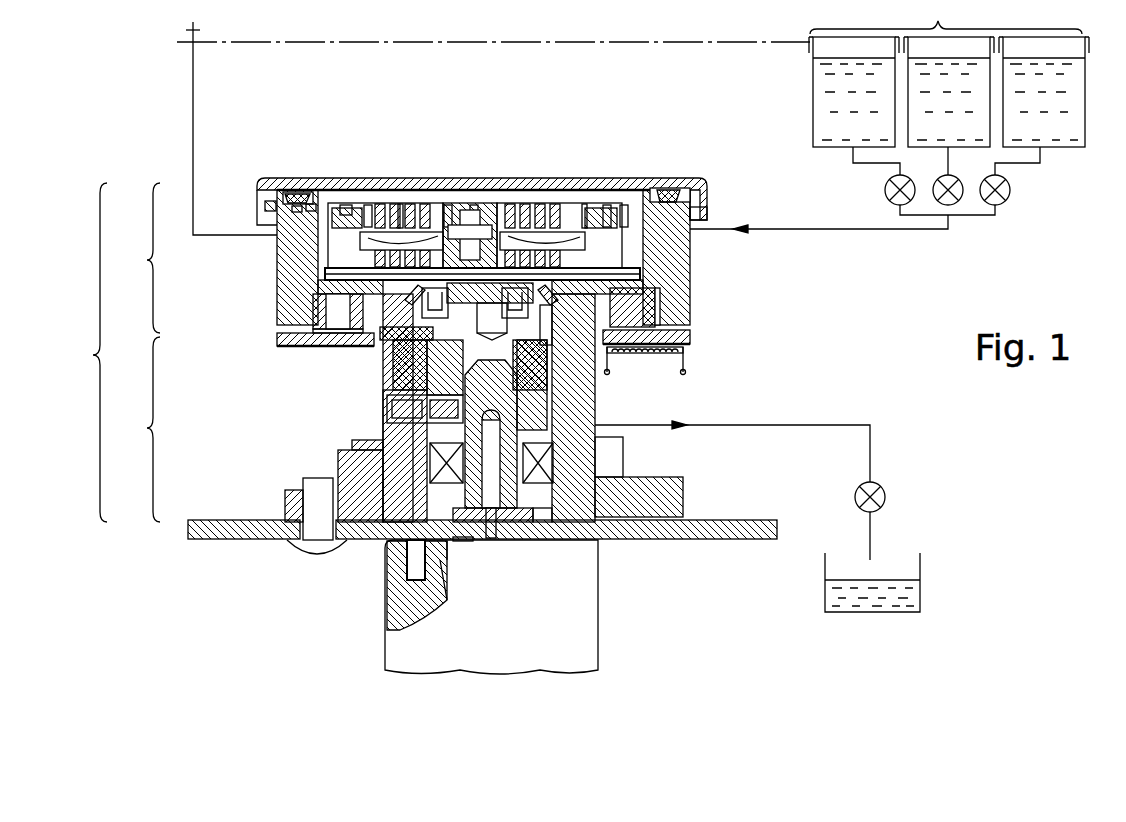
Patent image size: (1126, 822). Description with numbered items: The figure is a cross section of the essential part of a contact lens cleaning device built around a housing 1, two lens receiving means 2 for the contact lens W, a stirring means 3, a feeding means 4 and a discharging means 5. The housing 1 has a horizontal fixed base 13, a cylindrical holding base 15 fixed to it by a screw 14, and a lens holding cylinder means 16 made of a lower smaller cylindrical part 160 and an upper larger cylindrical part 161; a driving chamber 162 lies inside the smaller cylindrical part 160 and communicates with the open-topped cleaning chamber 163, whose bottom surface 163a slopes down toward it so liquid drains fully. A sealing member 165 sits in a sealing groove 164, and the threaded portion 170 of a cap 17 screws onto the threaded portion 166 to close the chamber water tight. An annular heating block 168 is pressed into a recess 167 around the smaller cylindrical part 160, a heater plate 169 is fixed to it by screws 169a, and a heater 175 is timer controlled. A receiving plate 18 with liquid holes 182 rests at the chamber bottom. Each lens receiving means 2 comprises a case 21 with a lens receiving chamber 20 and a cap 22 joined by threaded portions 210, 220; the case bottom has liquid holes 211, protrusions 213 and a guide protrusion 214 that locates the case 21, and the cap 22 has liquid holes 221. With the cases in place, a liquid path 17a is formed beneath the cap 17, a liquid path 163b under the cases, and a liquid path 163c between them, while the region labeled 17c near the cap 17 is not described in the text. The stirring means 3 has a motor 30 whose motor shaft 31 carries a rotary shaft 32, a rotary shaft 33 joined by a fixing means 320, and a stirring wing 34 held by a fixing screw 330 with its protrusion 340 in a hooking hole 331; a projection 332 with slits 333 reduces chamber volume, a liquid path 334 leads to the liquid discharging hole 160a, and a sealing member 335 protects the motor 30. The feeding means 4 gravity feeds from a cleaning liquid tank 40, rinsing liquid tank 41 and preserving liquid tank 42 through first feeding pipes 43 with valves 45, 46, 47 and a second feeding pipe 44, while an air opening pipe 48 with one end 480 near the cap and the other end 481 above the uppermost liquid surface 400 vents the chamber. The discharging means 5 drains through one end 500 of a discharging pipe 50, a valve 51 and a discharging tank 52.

The housing 1 is at (233, 574).
The lens receiving means 2 is at (543, 232).
The stirring means 3 is at (603, 619).
The feeding means 4 is at (946, 17).
The discharging means 5 is at (773, 434).
The fixed base 13 is at (212, 532).
The screw 14 is at (305, 550).
The holding base 15 is at (290, 502).
The lens holding cylinder means 16 is at (85, 352).
The cap 17 is at (417, 203).
The liquid path 17a is at (360, 208).
The stator center 17c is at (468, 210).
The receiving plate 18 is at (410, 345).
The lens receiving chamber 20 is at (380, 232).
The case 21 is at (432, 204).
The cap 22 is at (507, 204).
The motor 30 is at (395, 640).
The motor shaft 31 is at (497, 539).
The rotary shaft 32 is at (510, 522).
The rotary shaft 33 is at (538, 522).
The stirring wing 34 is at (440, 355).
The cleaning liquid tank 40 is at (813, 86).
The rinsing liquid tank 41 is at (908, 137).
The preserving liquid tank 42 is at (1083, 137).
The first feeding pipes 43 is at (853, 162).
The second feeding pipe 44 is at (857, 229).
The opening and closing valve 45 is at (885, 198).
The opening and closing valve 46 is at (955, 208).
The opening and closing valve 47 is at (1000, 206).
The air opening pipe 48 is at (193, 126).
The discharging pipe 50 is at (765, 425).
The opening and closing valve 51 is at (886, 499).
The discharging tank 52 is at (920, 562).
The smaller cylindrical part 160 is at (394, 408).
The liquid discharging hole 160a is at (600, 457).
The larger cylindrical part 161 is at (406, 255).
The driving chamber 162 is at (470, 540).
The cleaning chamber 163 is at (330, 268).
The bottom surface 163a is at (405, 300).
The liquid path 163b is at (447, 292).
The liquid path 163c is at (508, 303).
The sealing groove 164 is at (292, 206).
The sealing member 165 is at (290, 192).
The threaded portion 166 is at (265, 214).
The recess 167 is at (326, 310).
The heating block 168 is at (313, 322).
The heater plate 169 is at (280, 346).
The screws 169a is at (330, 346).
The threaded portion 170 is at (262, 194).
The heater 175 is at (690, 358).
The liquid holes 182 is at (390, 346).
The threaded portion 210 is at (450, 205).
The liquid holes 211 is at (345, 205).
The protrusions 213 is at (330, 282).
The guide protrusion 214 is at (575, 505).
The threaded portion 220 is at (474, 205).
The liquid holes 221 is at (400, 204).
The fixing means 320 is at (440, 580).
The fixing screw 330 is at (407, 568).
The hooking hole 331 is at (395, 425).
The projection 332 is at (600, 364).
The slits 333 is at (575, 374).
The liquid path 334 is at (575, 387).
The sealing member 335 is at (447, 560).
The protrusion 340 is at (420, 405).
The uppermost liquid surface 400 is at (665, 42).
The one end 480 is at (311, 204).
The other end 481 is at (196, 36).
The one end 500 is at (660, 425).
The contact lens W is at (368, 205).